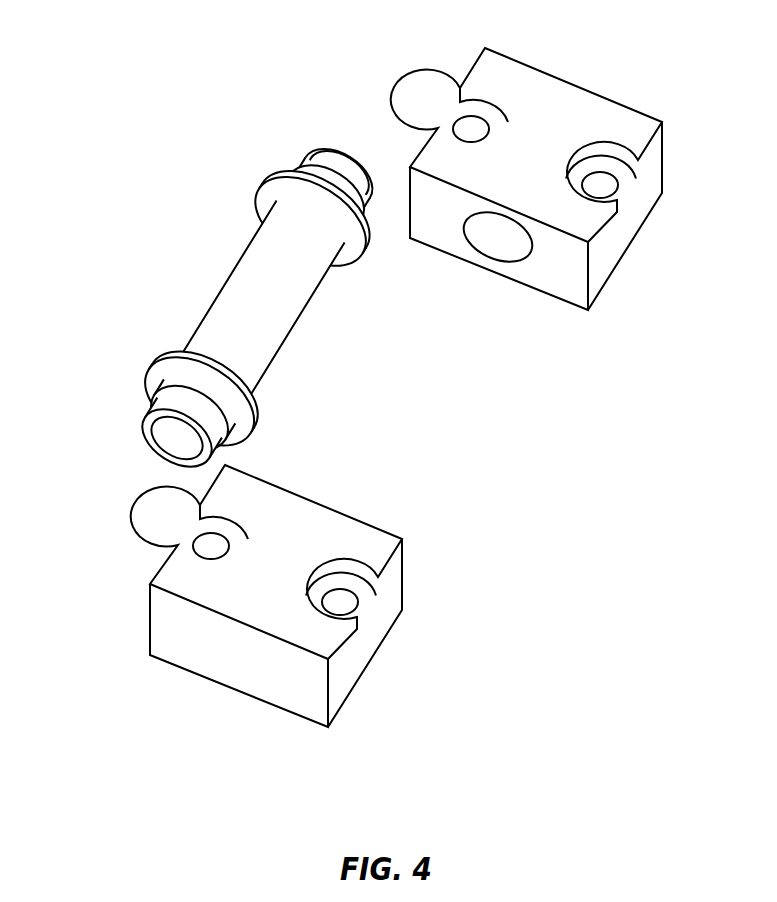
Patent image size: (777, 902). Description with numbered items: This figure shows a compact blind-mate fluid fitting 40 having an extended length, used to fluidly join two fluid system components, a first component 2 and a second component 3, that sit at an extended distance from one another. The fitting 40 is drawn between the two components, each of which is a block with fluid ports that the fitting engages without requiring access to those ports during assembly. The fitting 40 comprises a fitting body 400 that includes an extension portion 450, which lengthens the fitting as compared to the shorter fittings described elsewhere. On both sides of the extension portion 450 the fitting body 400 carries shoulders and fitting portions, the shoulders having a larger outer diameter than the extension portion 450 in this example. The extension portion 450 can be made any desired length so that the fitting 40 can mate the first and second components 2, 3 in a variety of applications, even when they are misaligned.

The first component 2 is at (637, 132).
The second component 3 is at (348, 668).
The blind-mate fluid fitting 40 is at (233, 254).
The fitting body 400 is at (218, 308).
The extension portion 450 is at (282, 320).